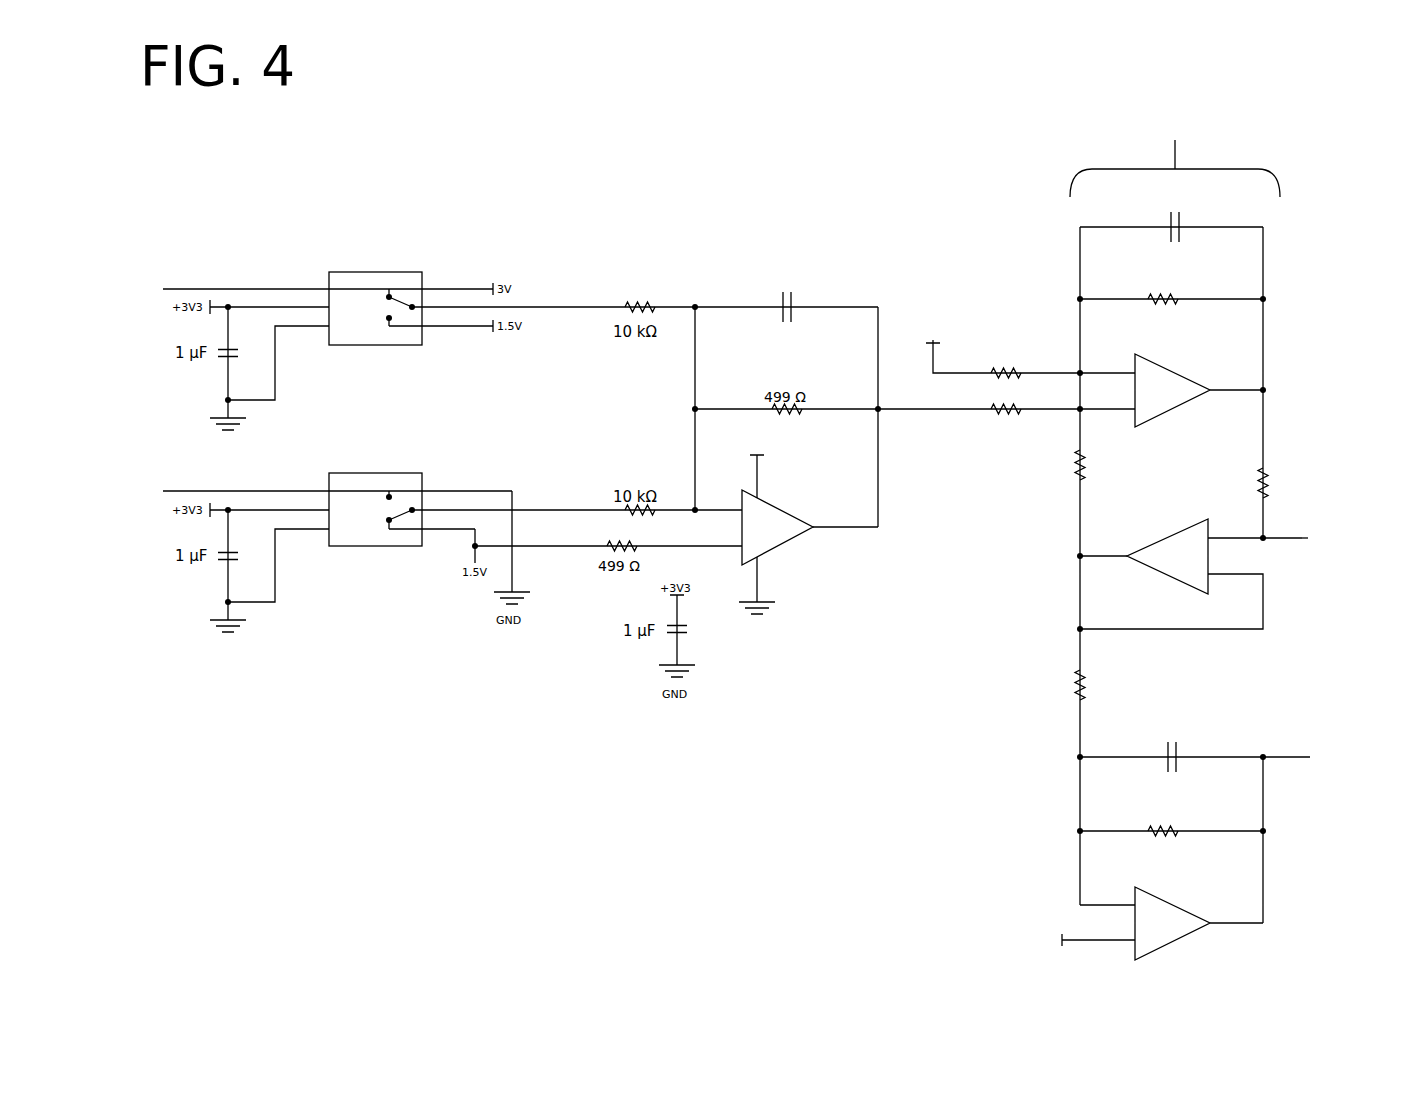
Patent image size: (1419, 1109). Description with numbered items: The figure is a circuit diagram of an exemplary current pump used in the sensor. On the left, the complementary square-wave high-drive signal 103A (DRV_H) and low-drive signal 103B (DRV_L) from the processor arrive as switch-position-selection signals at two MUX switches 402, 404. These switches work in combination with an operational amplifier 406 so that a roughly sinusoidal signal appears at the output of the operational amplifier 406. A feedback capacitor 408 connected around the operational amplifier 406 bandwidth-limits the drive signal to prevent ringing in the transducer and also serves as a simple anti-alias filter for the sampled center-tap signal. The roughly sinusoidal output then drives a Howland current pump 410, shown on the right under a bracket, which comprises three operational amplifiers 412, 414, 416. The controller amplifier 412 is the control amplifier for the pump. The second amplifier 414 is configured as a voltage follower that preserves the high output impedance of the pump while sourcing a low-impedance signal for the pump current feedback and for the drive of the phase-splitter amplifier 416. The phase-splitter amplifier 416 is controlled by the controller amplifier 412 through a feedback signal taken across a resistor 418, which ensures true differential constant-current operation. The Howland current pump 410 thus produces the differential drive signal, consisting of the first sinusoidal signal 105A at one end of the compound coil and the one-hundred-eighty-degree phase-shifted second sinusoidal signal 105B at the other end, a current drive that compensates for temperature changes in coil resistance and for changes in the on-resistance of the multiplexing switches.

The high-drive signal 103A is at (262, 289).
The low-drive signal 103B is at (262, 491).
The MUX switch 402 is at (393, 280).
The MUX switch 404 is at (393, 481).
The operational amplifier 406 is at (790, 530).
The feedback capacitor 408 is at (793, 300).
The Howland current pump 410 is at (1176, 116).
The controller amplifier 412 is at (1175, 380).
The voltage follower amplifier 414 is at (1170, 557).
The phase-splitter amplifier 416 is at (1175, 912).
The resistor 418 is at (1268, 470).
The first sinusoidal signal 105A is at (1305, 538).
The second sinusoidal signal 105B is at (1308, 757).